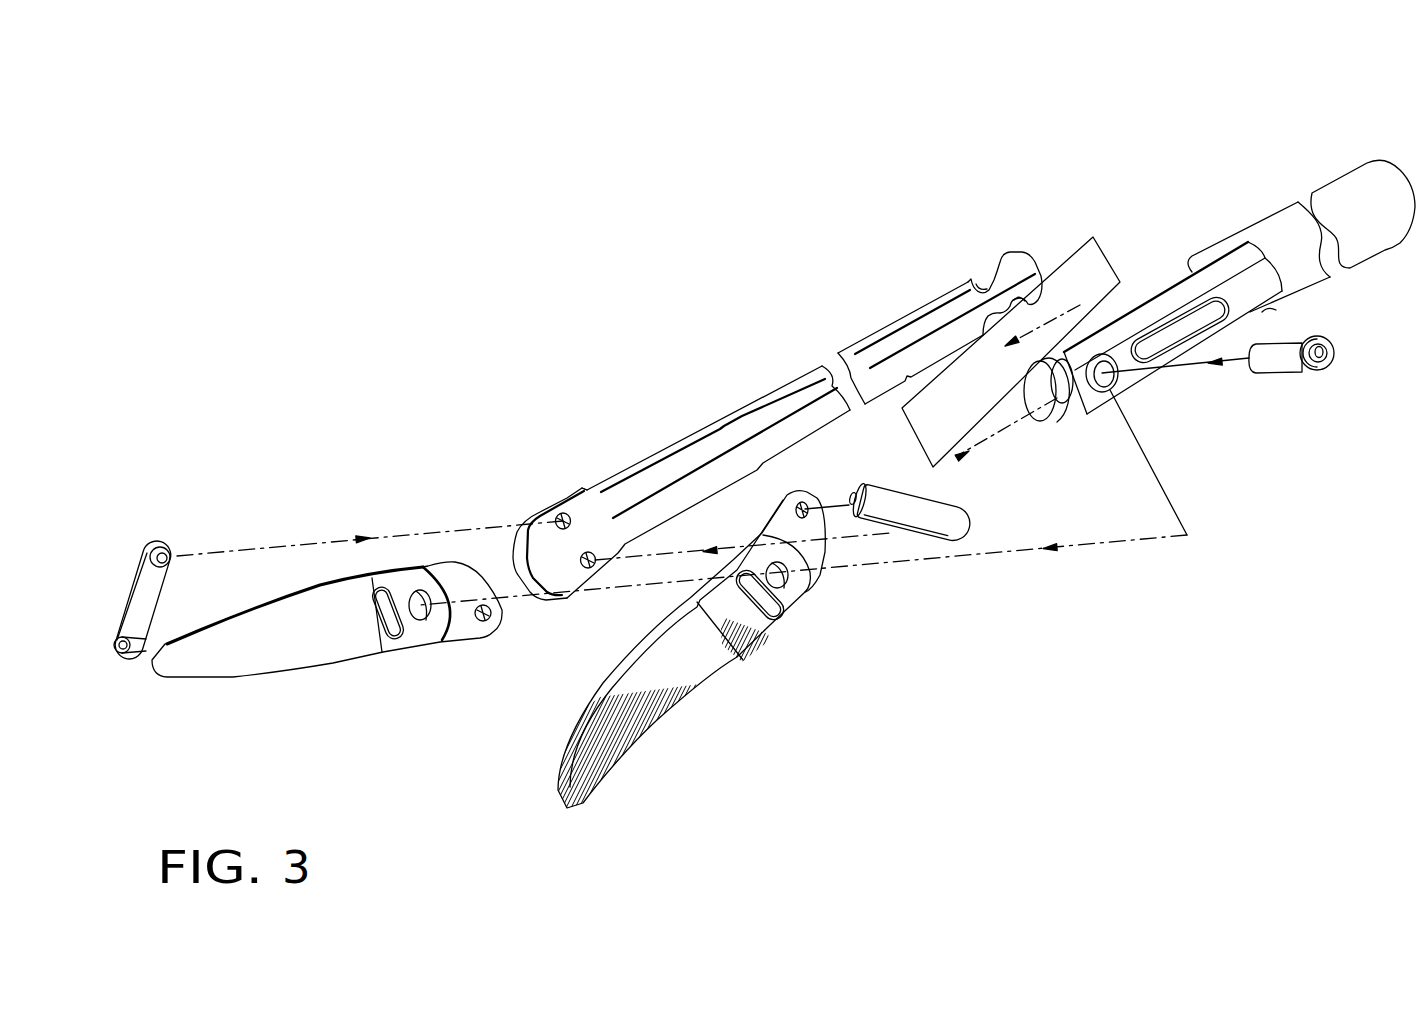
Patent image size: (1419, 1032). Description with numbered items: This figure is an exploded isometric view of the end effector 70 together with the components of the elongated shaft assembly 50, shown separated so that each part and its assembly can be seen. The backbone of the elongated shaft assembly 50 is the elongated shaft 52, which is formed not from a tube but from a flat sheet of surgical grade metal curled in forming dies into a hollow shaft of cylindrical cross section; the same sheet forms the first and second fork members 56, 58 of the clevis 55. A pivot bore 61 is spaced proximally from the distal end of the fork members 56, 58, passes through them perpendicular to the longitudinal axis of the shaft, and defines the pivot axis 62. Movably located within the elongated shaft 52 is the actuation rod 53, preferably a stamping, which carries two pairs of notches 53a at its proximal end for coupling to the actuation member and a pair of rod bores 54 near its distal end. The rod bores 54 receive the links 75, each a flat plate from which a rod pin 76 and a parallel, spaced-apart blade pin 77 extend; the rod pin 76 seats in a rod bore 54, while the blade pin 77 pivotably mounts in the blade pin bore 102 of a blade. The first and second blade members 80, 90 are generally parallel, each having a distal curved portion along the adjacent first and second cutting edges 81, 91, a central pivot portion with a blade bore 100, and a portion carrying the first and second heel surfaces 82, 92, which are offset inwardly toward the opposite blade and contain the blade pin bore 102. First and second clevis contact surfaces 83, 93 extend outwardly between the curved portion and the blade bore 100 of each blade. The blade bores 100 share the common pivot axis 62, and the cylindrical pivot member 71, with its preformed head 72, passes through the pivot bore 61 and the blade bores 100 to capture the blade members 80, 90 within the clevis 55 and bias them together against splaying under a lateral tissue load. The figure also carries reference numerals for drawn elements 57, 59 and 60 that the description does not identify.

The elongated shaft assembly 50 is at (1388, 143).
The elongated shaft 52 is at (1277, 178).
The actuation rod 53 is at (680, 440).
The notches 53a is at (1000, 270).
The rod bores 54 is at (558, 515).
The clevis 55 is at (1174, 280).
The first fork member 56 is at (1266, 318).
The boss 57 is at (1072, 425).
The second fork member 58 is at (1192, 258).
The slot 59 is at (1158, 296).
The flange 60 is at (1050, 410).
The pivot bore 61 is at (1110, 388).
The pivot axis 62 is at (1012, 558).
The end effector 70 is at (508, 320).
The pivot member 71 is at (1280, 375).
The preformed head 72 is at (1334, 355).
The links 75 is at (938, 505).
The rod pin 76 is at (172, 550).
The blade pin 77 is at (846, 496).
The first blade member 80 is at (681, 735).
The first cutting edge 81 is at (607, 690).
The first heel surface 82 is at (795, 524).
The first clevis contact surface 83 is at (752, 618).
The second blade member 90 is at (268, 697).
The second cutting edge 91 is at (313, 673).
The second heel surface 92 is at (455, 580).
The second clevis contact surface 93 is at (375, 585).
The blade bore 100 is at (785, 578).
The blade pin bore 102 is at (795, 507).